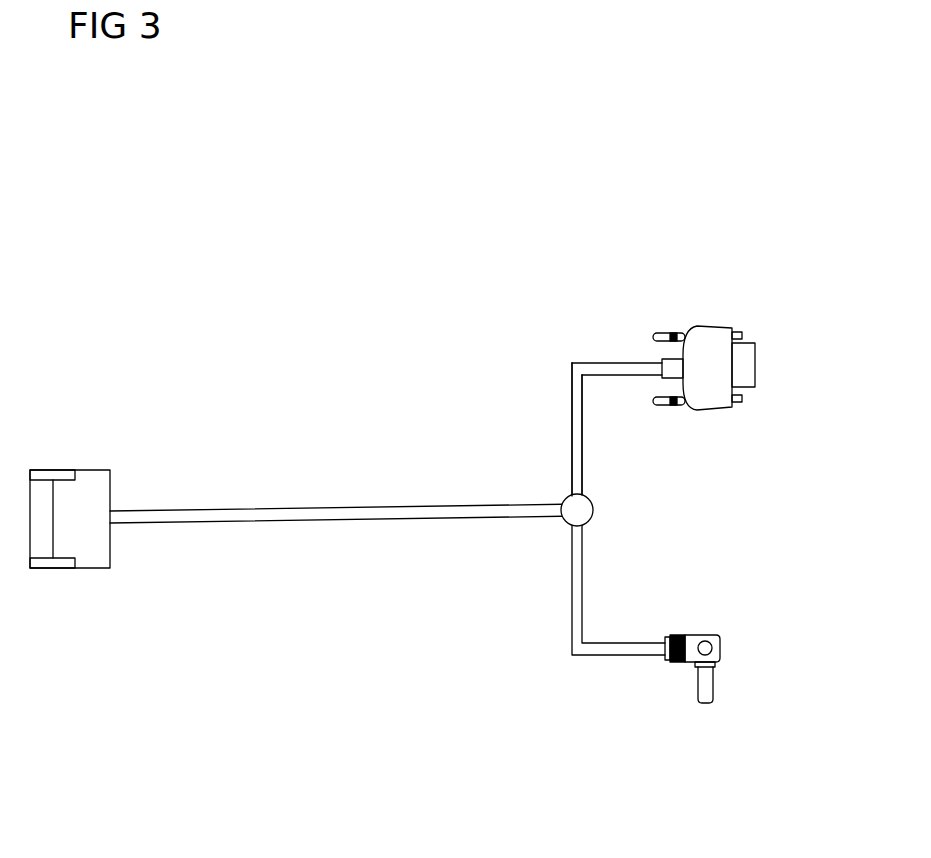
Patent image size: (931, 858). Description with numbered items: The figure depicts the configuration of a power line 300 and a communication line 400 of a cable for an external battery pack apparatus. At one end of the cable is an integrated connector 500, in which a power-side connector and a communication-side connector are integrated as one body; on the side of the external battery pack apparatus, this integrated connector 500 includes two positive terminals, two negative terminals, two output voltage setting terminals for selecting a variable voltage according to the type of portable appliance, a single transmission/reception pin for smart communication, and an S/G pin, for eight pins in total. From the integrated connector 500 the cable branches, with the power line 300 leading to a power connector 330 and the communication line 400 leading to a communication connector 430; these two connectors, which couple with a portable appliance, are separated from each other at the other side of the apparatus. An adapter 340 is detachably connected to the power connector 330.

The power line 300 is at (593, 652).
The power connector 330 is at (678, 635).
The adapter 340 is at (708, 685).
The communication line 400 is at (588, 363).
The communication connector 430 is at (723, 327).
The integrated connector 500 is at (64, 568).